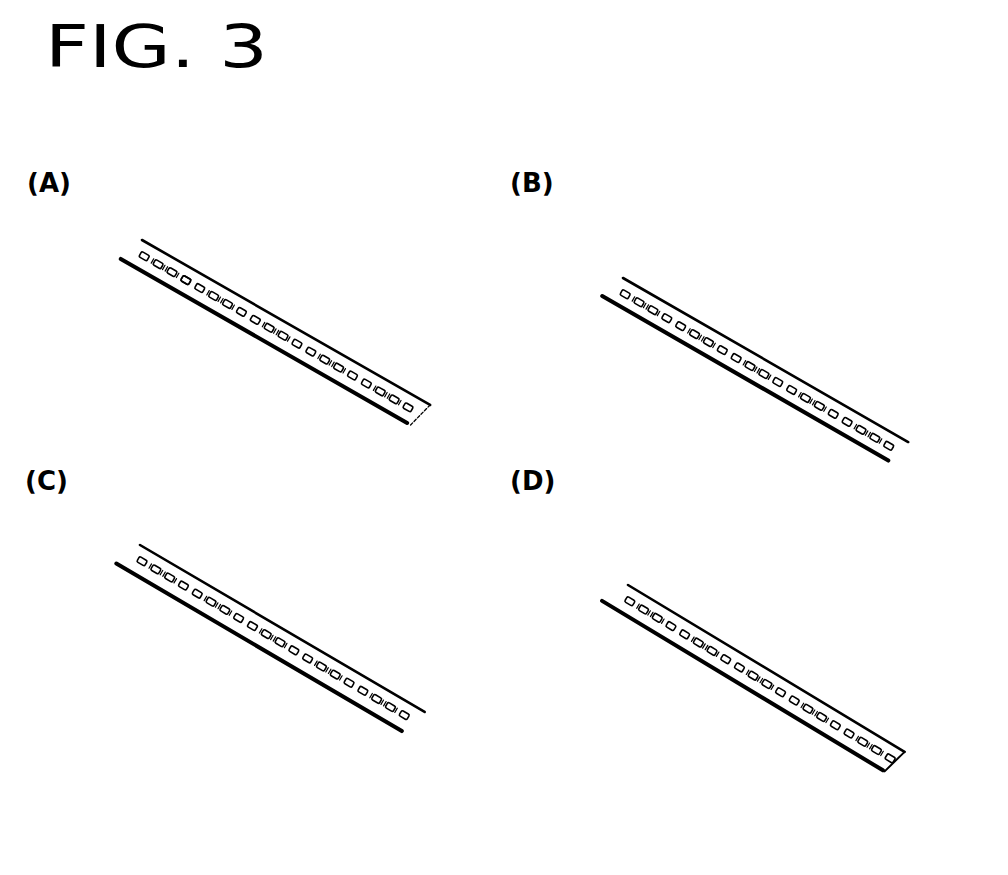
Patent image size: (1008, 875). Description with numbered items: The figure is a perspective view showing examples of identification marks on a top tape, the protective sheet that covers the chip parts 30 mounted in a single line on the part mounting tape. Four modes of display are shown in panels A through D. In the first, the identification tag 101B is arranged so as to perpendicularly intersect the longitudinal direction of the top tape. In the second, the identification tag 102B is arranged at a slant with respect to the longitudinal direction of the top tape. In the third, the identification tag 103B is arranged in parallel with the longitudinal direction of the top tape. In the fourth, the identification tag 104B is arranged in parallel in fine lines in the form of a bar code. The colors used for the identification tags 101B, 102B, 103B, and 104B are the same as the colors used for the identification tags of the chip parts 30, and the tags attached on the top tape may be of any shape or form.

The chip parts 30 is at (210, 306).
The identification tag 101B is at (275, 328).
The identification tag 102B is at (778, 367).
The identification tag 103B is at (290, 637).
The identification tag 104B is at (703, 628).